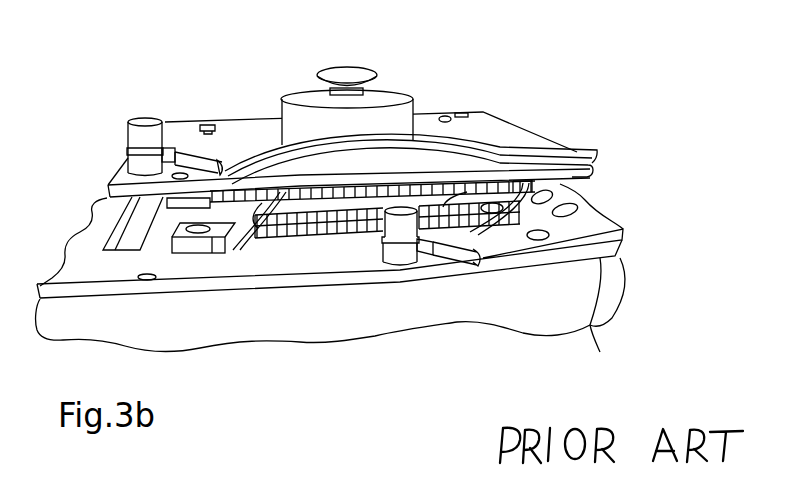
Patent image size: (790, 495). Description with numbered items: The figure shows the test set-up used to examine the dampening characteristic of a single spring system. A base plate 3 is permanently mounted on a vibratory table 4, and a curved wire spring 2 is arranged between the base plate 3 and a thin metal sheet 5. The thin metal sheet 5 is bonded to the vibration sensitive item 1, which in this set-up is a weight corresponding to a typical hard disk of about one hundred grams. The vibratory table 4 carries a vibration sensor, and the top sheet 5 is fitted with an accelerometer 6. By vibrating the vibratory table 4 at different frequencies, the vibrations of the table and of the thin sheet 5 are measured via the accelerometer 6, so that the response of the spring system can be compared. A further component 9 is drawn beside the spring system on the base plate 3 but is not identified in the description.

The vibration sensitive item 1 is at (305, 102).
The curved wire spring 2 is at (553, 210).
The base plate 3 is at (590, 325).
The vibratory table 4 is at (518, 314).
The thin metal sheet 5 is at (590, 172).
The accelerometer 6 is at (145, 119).
The connector cylinder 9 is at (403, 263).